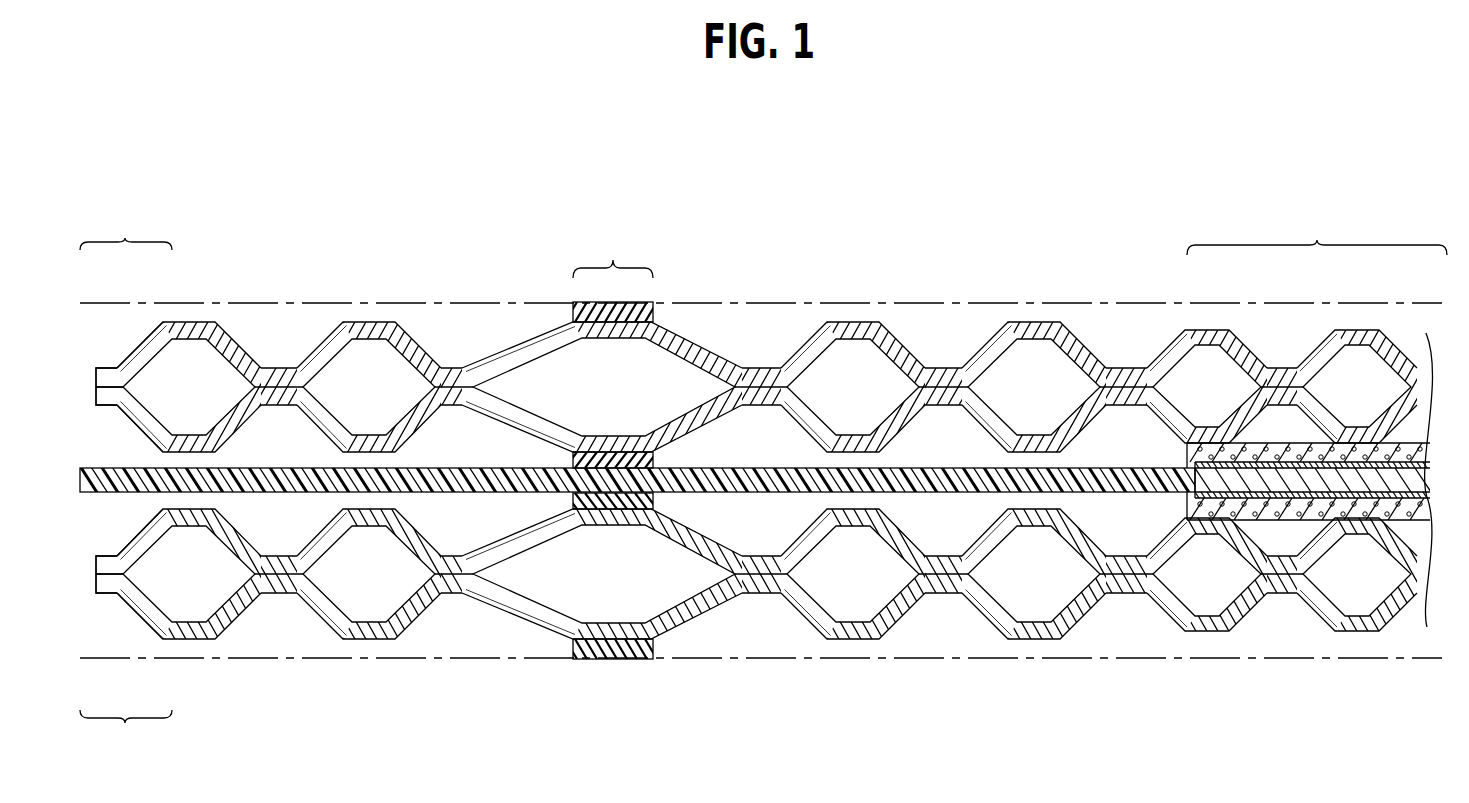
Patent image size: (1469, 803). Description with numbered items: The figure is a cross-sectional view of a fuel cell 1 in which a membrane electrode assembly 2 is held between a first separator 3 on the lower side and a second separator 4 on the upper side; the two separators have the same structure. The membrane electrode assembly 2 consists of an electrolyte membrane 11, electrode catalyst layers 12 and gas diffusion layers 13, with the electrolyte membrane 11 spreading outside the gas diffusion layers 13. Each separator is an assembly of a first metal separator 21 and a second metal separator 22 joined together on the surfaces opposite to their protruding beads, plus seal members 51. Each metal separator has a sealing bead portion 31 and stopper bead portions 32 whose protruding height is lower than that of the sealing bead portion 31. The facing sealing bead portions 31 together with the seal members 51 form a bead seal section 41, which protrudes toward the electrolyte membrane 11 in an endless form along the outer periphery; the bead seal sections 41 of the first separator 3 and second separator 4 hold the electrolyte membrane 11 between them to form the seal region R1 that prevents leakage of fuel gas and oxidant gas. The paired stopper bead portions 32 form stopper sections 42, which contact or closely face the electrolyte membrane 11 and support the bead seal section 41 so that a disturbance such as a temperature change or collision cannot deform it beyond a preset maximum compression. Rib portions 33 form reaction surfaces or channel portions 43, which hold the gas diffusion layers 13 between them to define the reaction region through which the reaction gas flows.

The fuel cell 1 is at (346, 228).
The membrane electrode assembly 2 is at (1317, 361).
The first separator 3 is at (126, 658).
The second separator 4 is at (126, 303).
The electrolyte membrane 11 is at (1325, 482).
The electrode catalyst layer 12 is at (1245, 465).
The gas diffusion layer 13 is at (1203, 450).
The first metal separator 21 is at (120, 424).
The second metal separator 22 is at (131, 335).
The sealing bead portion 31 is at (527, 356).
The stopper bead portion 32 is at (230, 353).
The rib portion 33 is at (1178, 353).
The bead seal section 41 is at (540, 453).
The stopper section 42 is at (152, 452).
The reaction surface or channel portion 43 is at (1177, 441).
The seal member 51 is at (652, 315).
The seal region R1 is at (613, 252).